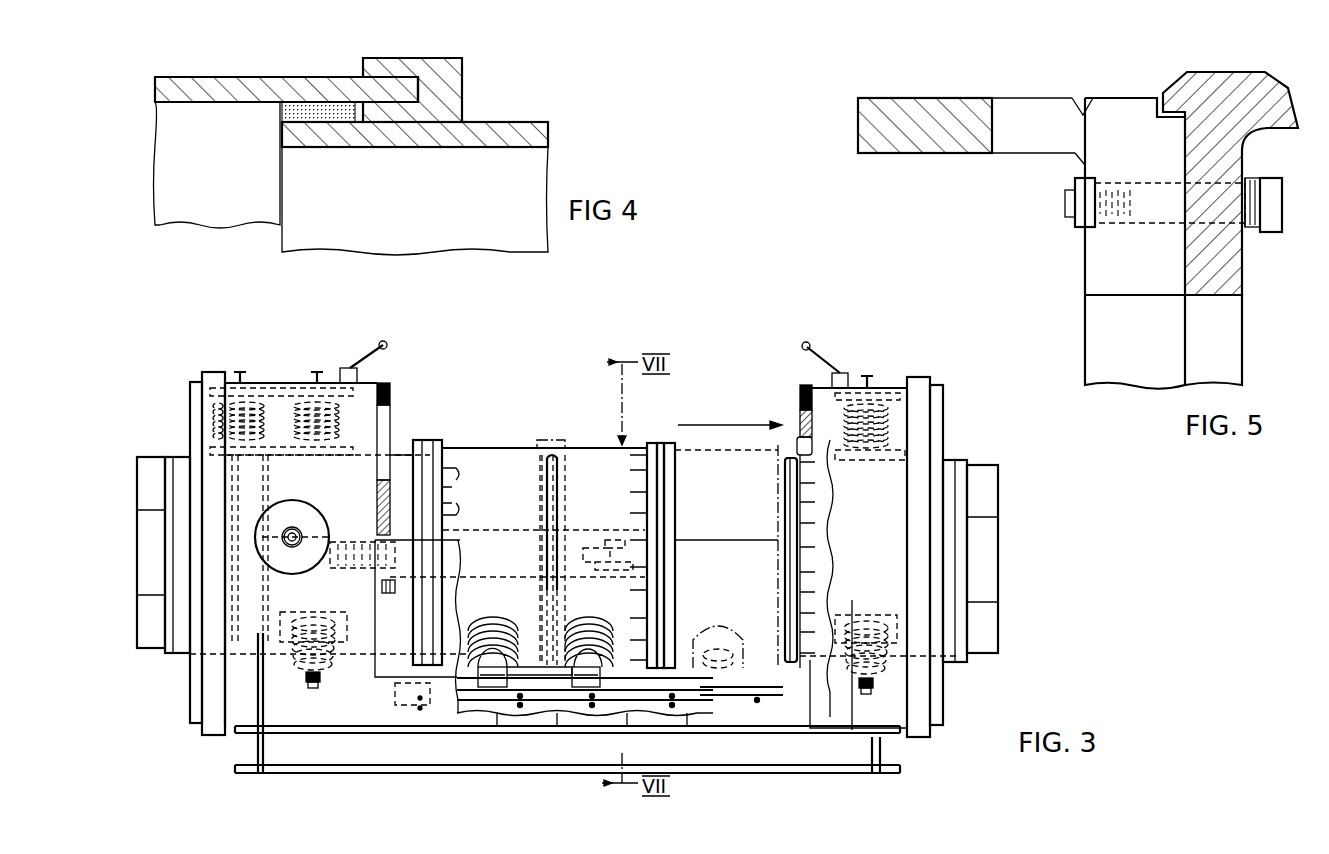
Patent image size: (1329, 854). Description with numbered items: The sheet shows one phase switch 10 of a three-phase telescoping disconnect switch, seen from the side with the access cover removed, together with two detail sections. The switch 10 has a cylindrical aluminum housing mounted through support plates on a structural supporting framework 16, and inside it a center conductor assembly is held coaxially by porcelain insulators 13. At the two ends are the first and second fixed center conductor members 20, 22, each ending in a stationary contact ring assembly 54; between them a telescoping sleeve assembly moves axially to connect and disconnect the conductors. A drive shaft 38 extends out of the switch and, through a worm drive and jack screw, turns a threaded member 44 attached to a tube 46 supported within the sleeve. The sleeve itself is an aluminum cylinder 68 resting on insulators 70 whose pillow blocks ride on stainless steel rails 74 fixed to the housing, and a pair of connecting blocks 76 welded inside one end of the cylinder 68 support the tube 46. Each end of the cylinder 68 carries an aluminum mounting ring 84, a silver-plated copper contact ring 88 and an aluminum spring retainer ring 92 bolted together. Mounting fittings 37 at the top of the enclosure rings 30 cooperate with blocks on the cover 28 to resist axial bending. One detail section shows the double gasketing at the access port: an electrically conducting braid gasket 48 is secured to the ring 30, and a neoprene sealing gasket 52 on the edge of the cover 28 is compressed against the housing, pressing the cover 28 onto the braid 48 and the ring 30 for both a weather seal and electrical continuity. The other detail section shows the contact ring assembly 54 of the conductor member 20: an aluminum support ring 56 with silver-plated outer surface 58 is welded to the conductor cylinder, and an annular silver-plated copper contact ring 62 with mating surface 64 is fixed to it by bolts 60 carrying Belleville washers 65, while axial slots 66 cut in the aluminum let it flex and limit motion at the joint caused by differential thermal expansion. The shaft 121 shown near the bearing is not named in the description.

In FIG. 3, the phase switch 10 is at (212, 773).
In FIG. 3, the porcelain insulators 13 is at (290, 403).
In FIG. 3, the structural supporting framework 16 is at (892, 775).
In FIG. 5, the first fixed center conductor member 20 is at (997, 153).
In FIG. 3, the first fixed center conductor member 20 is at (171, 457).
In FIG. 3, the second fixed center conductor member 22 is at (946, 460).
In FIG. 4, the cover 28 is at (252, 77).
In FIG. 4, the enclosure rings 30 is at (539, 122).
In FIG. 3, the mounting fittings 37 is at (350, 368).
In FIG. 3, the drive shaft 38 is at (294, 528).
In FIG. 3, the shaft 121 is at (314, 510).
In FIG. 3, the threaded member 44 is at (394, 532).
In FIG. 3, the tube 46 is at (527, 530).
In FIG. 4, the electrically conducting gasket 48 is at (282, 108).
In FIG. 4, the sealing gasket 52 is at (462, 81).
In FIG. 5, the stationary contact ring assembly 54 is at (1162, 73).
In FIG. 3, the stationary contact ring assembly 54 is at (557, 516).
In FIG. 5, the aluminum support ring 56 is at (1128, 101).
In FIG. 5, the outer surface 58 is at (1185, 164).
In FIG. 5, the bolts 60 is at (1283, 206).
In FIG. 5, the copper contact ring 62 is at (1283, 81).
In FIG. 5, the surface 64 is at (1186, 142).
In FIG. 5, the Belleville washers 65 is at (1253, 232).
In FIG. 5, the axial slots 66 is at (1067, 102).
In FIG. 3, the axial slots 66 is at (456, 514).
In FIG. 3, the aluminum cylinder 68 is at (609, 447).
In FIG. 3, the insulators 70 is at (542, 632).
In FIG. 3, the rails 74 is at (538, 696).
In FIG. 3, the connecting blocks 76 is at (594, 546).
In FIG. 3, the aluminum mounting ring 84 is at (651, 443).
In FIG. 3, the copper contact ring 88 is at (660, 443).
In FIG. 3, the aluminum spring retainer ring 92 is at (675, 446).